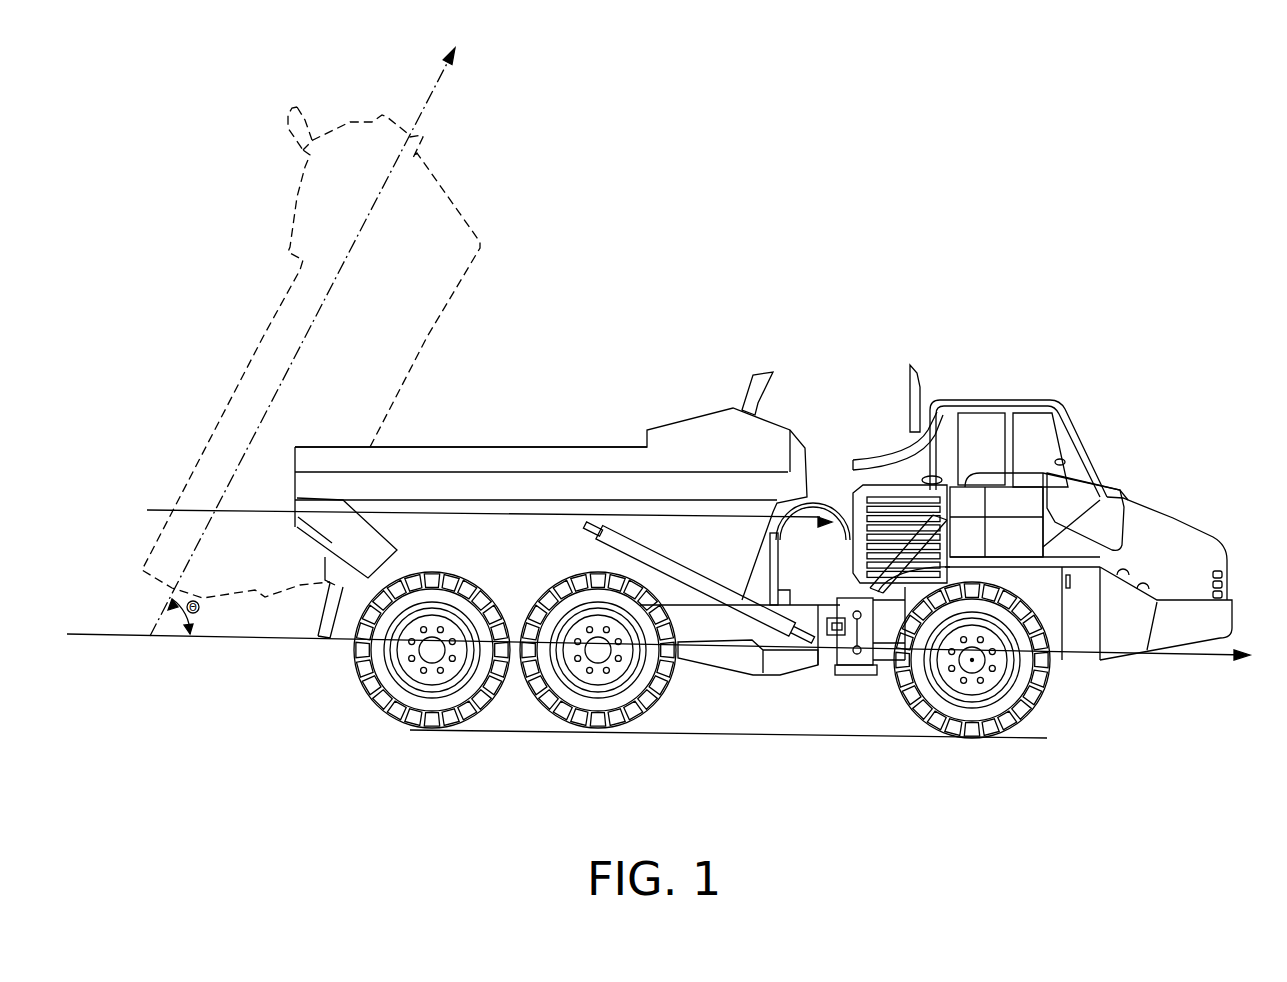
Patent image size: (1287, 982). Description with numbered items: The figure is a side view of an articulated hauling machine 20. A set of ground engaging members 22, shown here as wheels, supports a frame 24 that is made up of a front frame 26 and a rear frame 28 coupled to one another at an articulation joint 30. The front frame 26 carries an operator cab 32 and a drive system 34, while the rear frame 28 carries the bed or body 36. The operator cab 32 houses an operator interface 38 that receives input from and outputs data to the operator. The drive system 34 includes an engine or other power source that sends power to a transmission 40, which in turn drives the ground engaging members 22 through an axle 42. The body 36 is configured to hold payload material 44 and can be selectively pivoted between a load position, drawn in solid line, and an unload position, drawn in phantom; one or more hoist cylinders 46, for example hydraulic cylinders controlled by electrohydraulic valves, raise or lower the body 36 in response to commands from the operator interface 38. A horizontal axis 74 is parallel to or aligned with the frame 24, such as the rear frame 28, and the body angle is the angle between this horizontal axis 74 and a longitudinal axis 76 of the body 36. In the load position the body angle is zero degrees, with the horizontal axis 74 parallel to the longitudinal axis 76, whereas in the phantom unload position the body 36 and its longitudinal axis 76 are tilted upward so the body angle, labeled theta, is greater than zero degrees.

The machine 20 is at (1052, 168).
The ground engaging members 22 is at (377, 703).
The frame 24 is at (800, 722).
The front frame 26 is at (1115, 630).
The rear frame 28 is at (775, 663).
The articulation joint 30 is at (860, 660).
The operator cab 32 is at (990, 474).
The drive system 34 is at (1130, 630).
The body 36 is at (551, 505).
The operator interface 38 is at (1071, 400).
The transmission 40 is at (1080, 645).
The axle 42 is at (972, 662).
The payload material 44 is at (470, 447).
The hoist cylinders 46 is at (657, 560).
The horizontal axis 74 is at (242, 640).
The longitudinal axis 76 is at (425, 102).